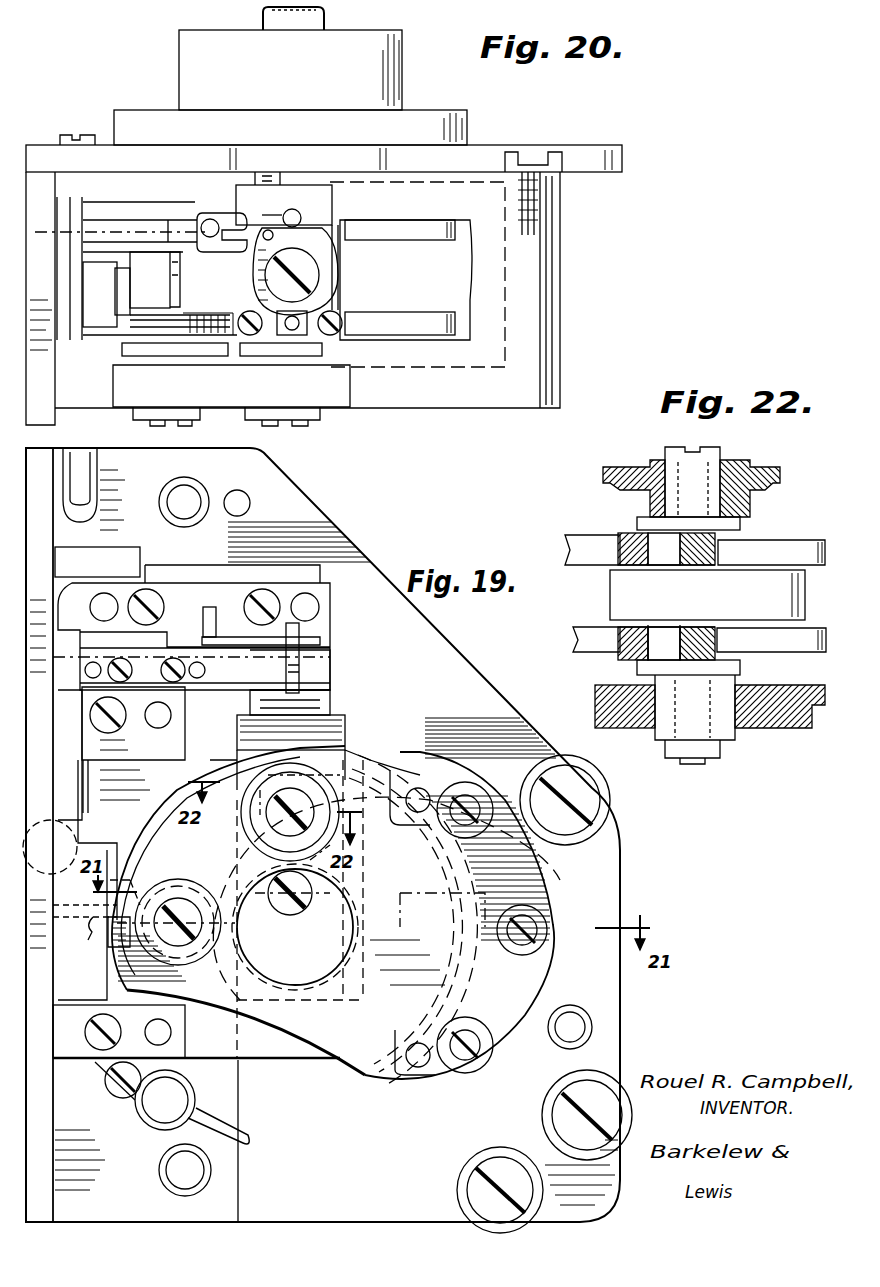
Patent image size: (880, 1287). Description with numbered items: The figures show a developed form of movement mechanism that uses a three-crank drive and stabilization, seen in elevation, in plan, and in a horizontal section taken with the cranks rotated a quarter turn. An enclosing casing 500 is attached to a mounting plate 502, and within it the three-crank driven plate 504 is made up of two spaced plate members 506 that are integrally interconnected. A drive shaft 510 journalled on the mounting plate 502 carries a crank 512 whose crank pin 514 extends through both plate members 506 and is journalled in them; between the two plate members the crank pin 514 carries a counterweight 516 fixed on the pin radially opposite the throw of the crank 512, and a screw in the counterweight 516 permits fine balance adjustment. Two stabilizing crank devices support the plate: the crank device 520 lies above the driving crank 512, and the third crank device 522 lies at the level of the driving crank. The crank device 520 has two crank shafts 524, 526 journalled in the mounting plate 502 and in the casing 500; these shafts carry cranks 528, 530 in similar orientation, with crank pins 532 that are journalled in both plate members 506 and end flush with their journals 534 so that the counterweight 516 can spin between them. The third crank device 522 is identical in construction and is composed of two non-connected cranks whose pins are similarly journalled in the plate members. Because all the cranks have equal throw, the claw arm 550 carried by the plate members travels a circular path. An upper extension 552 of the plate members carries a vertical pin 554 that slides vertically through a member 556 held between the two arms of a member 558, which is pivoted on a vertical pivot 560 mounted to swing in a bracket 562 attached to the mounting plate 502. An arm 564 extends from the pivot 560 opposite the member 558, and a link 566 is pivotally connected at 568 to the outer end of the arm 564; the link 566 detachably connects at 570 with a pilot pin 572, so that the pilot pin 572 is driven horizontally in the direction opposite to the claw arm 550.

In FIG. 20, the enclosing casing 500 is at (535, 297).
In FIG. 22, the enclosing casing 500 is at (778, 728).
In FIG. 19, the enclosing casing 500 is at (540, 890).
In FIG. 20, the mounting plate 502 is at (611, 161).
In FIG. 22, the mounting plate 502 is at (628, 465).
In FIG. 19, the mounting plate 502 is at (450, 707).
In FIG. 20, the three-crank driven plate 504 is at (410, 240).
In FIG. 22, the three-crank driven plate 504 is at (800, 537).
In FIG. 19, the three-crank driven plate 504 is at (440, 925).
In FIG. 20, the plate members 506 is at (365, 238).
In FIG. 22, the plate members 506 is at (590, 535).
In FIG. 20, the drive shaft 510 is at (326, 17).
In FIG. 19, the crank 512 is at (306, 972).
In FIG. 19, the crank pin 514 is at (290, 916).
In FIG. 22, the counterweight 516 is at (745, 606).
In FIG. 19, the counterweight 516 is at (275, 1050).
In FIG. 20, the crank device 520 is at (305, 352).
In FIG. 22, the crank device 520 is at (617, 660).
In FIG. 19, the crank device 520 is at (365, 760).
In FIG. 20, the third crank device 522 is at (140, 372).
In FIG. 19, the third crank device 522 is at (188, 895).
In FIG. 22, the crank shaft 524 is at (722, 458).
In FIG. 22, the crank shaft 526 is at (715, 745).
In FIG. 19, the crank shaft 526 is at (282, 830).
In FIG. 22, the crank 528 is at (742, 524).
In FIG. 22, the crank 530 is at (742, 668).
In FIG. 22, the crank pins 532 is at (655, 640).
In FIG. 22, the journals 534 is at (628, 540).
In FIG. 19, the claw arm 550 is at (105, 938).
In FIG. 20, the upper extension 552 is at (338, 222).
In FIG. 19, the upper extension 552 is at (345, 715).
In FIG. 20, the vertical pin 554 is at (292, 333).
In FIG. 19, the vertical pin 554 is at (300, 660).
In FIG. 19, the member 556 is at (250, 706).
In FIG. 20, the member 558 is at (262, 340).
In FIG. 19, the member 558 is at (237, 738).
In FIG. 20, the vertical pivot 560 is at (318, 280).
In FIG. 20, the bracket 562 is at (299, 212).
In FIG. 19, the bracket 562 is at (300, 700).
In FIG. 20, the arm 564 is at (265, 240).
In FIG. 19, the arm 564 is at (320, 640).
In FIG. 20, the link 566 is at (262, 214).
In FIG. 20, the pivotal connection 568 is at (258, 178).
In FIG. 20, the detachable connection 570 is at (205, 213).
In FIG. 20, the pilot pin 572 is at (118, 220).